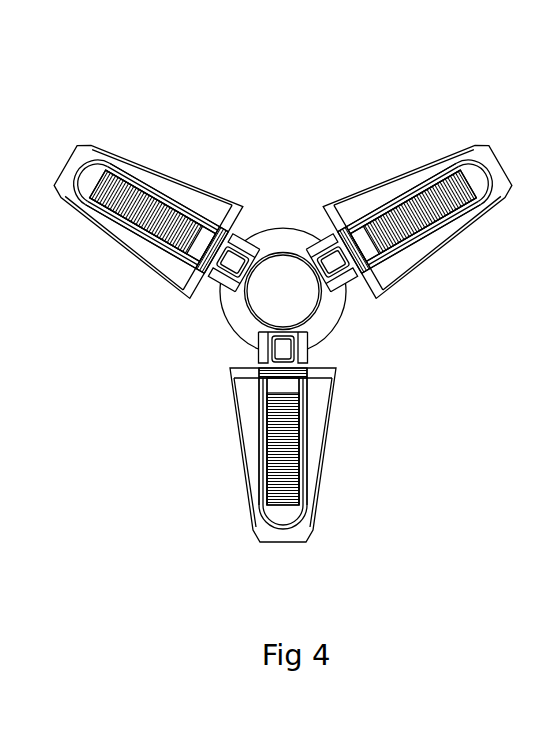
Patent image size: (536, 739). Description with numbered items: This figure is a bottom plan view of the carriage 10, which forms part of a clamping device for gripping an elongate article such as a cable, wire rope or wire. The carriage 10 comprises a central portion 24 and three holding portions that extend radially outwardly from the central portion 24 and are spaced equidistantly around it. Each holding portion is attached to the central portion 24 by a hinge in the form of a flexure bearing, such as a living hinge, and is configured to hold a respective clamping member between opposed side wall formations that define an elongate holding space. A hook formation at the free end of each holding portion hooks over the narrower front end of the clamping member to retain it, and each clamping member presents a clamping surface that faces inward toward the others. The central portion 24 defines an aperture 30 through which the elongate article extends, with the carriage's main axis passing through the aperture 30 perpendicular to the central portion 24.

The carriage 10 is at (362, 350).
The central portion 24 is at (222, 330).
The aperture 30 is at (250, 310).